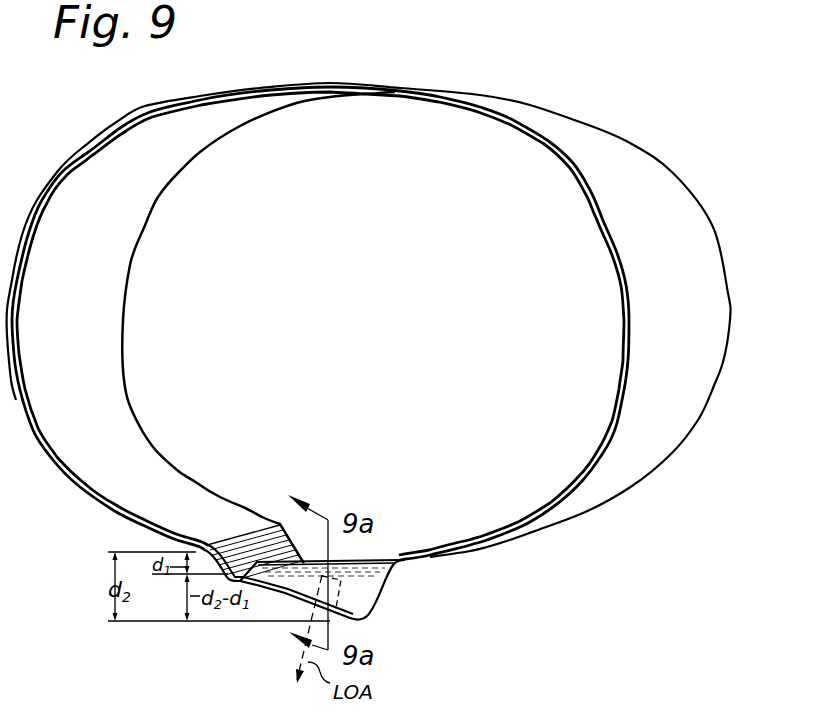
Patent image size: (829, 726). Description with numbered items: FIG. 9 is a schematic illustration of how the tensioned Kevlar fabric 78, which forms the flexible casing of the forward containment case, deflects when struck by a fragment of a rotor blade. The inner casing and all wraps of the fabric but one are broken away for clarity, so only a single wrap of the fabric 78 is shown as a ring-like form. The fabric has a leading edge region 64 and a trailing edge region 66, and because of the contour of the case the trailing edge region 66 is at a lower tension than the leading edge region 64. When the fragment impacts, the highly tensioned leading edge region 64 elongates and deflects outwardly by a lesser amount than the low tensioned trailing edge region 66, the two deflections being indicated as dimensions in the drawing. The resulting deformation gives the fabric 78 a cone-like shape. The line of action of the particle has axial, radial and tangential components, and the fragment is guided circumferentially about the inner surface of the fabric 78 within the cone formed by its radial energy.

The leading edge region 64 is at (115, 501).
The trailing edge region 66 is at (192, 487).
The tensioned Kevlar fabric 78 is at (686, 328).